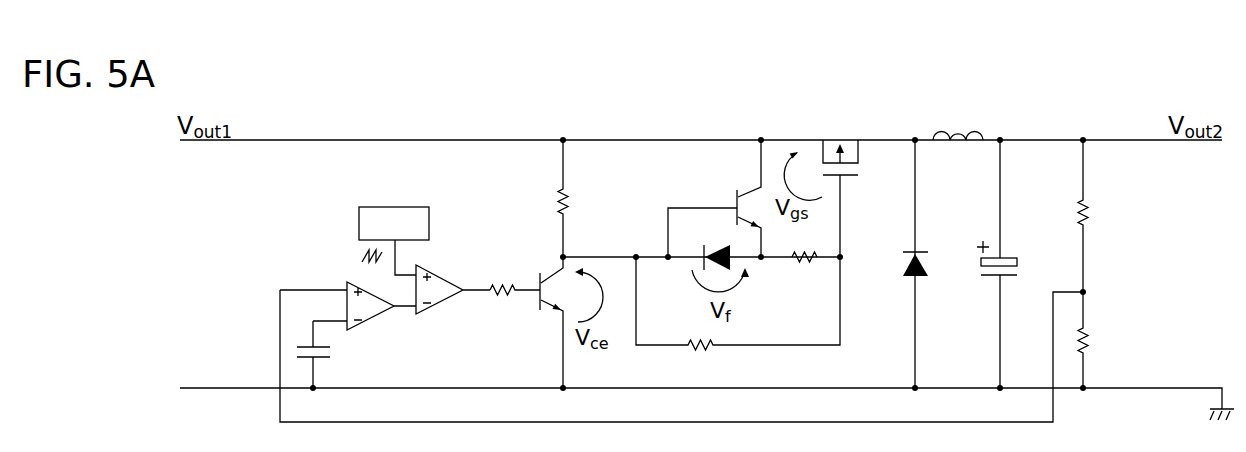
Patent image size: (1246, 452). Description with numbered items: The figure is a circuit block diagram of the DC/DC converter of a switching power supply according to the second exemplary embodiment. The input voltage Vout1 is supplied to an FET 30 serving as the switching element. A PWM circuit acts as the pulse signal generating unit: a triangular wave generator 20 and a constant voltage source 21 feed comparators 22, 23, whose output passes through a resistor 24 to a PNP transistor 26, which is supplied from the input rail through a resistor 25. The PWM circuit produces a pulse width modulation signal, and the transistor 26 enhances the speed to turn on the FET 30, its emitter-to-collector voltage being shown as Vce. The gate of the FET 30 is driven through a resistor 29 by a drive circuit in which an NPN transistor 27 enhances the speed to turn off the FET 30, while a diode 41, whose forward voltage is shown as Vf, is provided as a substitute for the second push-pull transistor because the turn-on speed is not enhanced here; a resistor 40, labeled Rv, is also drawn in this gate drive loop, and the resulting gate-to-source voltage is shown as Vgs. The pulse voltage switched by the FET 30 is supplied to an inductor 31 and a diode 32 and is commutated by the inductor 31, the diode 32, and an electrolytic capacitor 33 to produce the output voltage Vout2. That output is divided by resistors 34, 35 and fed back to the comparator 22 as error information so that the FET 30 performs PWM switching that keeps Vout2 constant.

The triangular wave generator 20 is at (370, 207).
The constant voltage source 21 is at (332, 358).
The comparator 22 is at (378, 317).
The comparator 23 is at (447, 300).
The resistor 24 is at (507, 296).
The resistor 25 is at (556, 196).
The transistor 26 is at (538, 276).
The NPN transistor 27 is at (735, 196).
The resistor 29 is at (814, 263).
The FET 30 is at (848, 178).
The inductor 31 is at (963, 146).
The diode 32 is at (920, 282).
The electrolytic capacitor 33 is at (1006, 257).
The resistor 34 is at (1087, 203).
The resistor 35 is at (1087, 333).
The resistor Rv 40 is at (712, 352).
The diode 41 is at (716, 246).